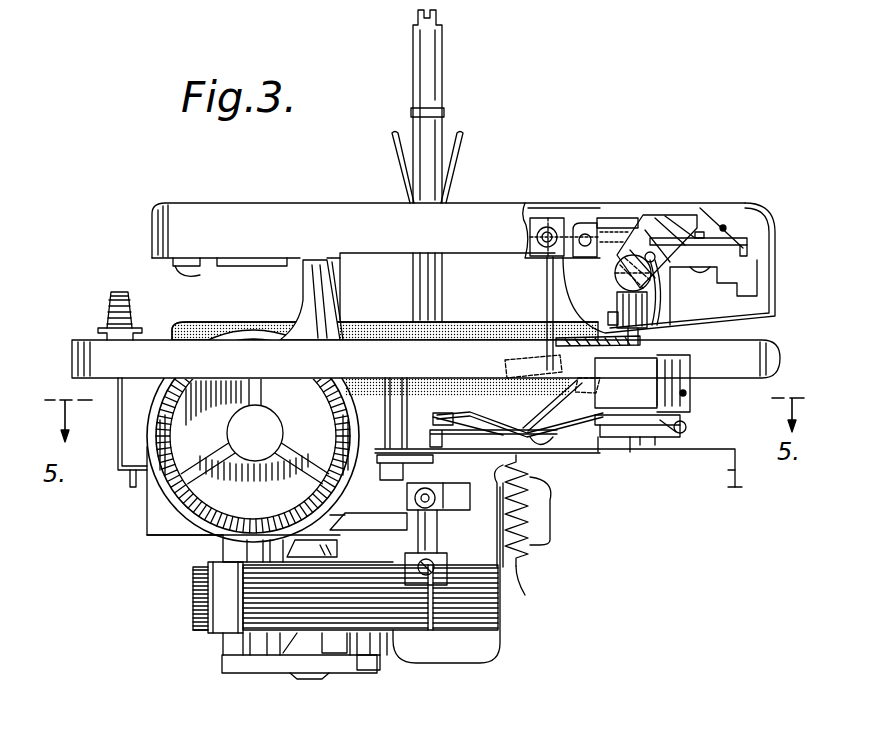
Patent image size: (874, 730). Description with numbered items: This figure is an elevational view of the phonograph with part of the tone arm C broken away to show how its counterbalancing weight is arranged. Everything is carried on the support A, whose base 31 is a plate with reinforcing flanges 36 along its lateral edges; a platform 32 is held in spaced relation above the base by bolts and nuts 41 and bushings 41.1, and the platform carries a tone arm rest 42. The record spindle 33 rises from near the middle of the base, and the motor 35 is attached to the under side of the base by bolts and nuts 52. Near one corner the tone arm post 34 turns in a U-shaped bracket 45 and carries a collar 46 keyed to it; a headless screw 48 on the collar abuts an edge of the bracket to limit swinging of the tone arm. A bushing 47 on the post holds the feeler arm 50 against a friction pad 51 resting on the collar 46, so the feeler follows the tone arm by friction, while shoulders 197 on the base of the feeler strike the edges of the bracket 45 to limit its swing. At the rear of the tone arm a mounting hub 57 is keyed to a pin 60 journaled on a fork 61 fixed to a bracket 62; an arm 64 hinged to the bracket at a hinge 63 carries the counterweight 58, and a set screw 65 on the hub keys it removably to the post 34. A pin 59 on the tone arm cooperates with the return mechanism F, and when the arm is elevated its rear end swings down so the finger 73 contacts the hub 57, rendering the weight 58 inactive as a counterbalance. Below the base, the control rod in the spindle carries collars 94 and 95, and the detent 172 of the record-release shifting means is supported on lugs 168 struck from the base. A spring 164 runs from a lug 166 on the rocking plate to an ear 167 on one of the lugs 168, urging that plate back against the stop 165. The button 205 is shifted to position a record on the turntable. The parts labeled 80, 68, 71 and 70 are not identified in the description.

The upright post 80 is at (440, 48).
The button 205 is at (108, 295).
The tone arm rest 42 is at (330, 292).
The record spindle 33 is at (440, 292).
The pin 59 is at (546, 310).
The platform 32 is at (80, 362).
The reinforcing flanges 36 is at (130, 488).
The hinge 63 is at (575, 215).
The fork 61 is at (645, 214).
The bracket 62 is at (670, 215).
The arm 68 is at (712, 210).
The arm 64 is at (725, 228).
The stop 71 is at (745, 236).
The lug 70 is at (748, 245).
The pin 60 is at (631, 272).
The mounting hub 57 is at (616, 298).
The set screw 65 is at (608, 316).
The finger 73 is at (660, 290).
The counterweight 58 is at (730, 298).
The tone arm post 34 is at (642, 396).
The feeler arm 50 is at (585, 392).
The bushing 47 is at (690, 368).
The U-shaped bracket 45 is at (686, 393).
The shoulders 197 is at (684, 422).
The headless screw 48 is at (676, 432).
The collar 46 is at (655, 445).
The friction pad 51 is at (630, 452).
The base 31 is at (598, 455).
The bushings 41.1 is at (415, 405).
The bolts and nuts 41 is at (412, 485).
The detent 172 is at (347, 524).
The collar 95 is at (438, 525).
The collar 94 is at (447, 565).
The stop 165 is at (568, 452).
The lug 166 is at (548, 500).
The lugs 168 is at (550, 530).
The spring 164 is at (530, 545).
The ear 167 is at (518, 575).
The motor 35 is at (215, 605).
The bolts and nuts 52 is at (380, 665).